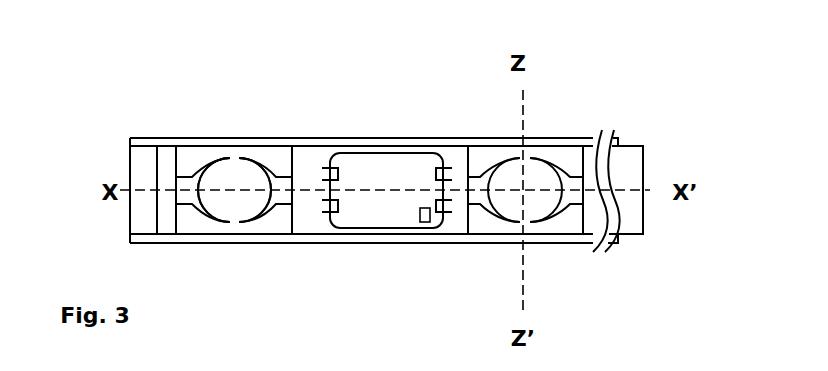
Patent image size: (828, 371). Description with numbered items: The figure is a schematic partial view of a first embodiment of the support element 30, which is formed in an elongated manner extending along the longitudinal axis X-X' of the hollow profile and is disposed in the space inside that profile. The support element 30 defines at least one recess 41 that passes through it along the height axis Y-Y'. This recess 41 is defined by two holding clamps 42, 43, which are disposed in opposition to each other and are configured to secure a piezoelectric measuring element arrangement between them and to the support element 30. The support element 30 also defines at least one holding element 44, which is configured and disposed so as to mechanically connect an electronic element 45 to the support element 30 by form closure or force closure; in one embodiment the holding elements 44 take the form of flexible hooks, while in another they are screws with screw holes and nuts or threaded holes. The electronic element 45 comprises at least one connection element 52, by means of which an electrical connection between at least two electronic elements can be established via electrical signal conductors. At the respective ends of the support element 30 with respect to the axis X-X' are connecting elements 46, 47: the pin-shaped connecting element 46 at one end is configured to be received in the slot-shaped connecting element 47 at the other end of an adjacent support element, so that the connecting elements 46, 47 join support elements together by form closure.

The support element 30 is at (457, 150).
The recess 41 is at (228, 207).
The holding clamp 42 is at (197, 187).
The holding clamp 43 is at (277, 177).
The holding element 44 is at (440, 203).
The electronic element 45 is at (398, 198).
The pin-shaped connecting element 46 is at (628, 258).
The slot-shaped connecting element 47 is at (138, 239).
The connection element 52 is at (425, 222).